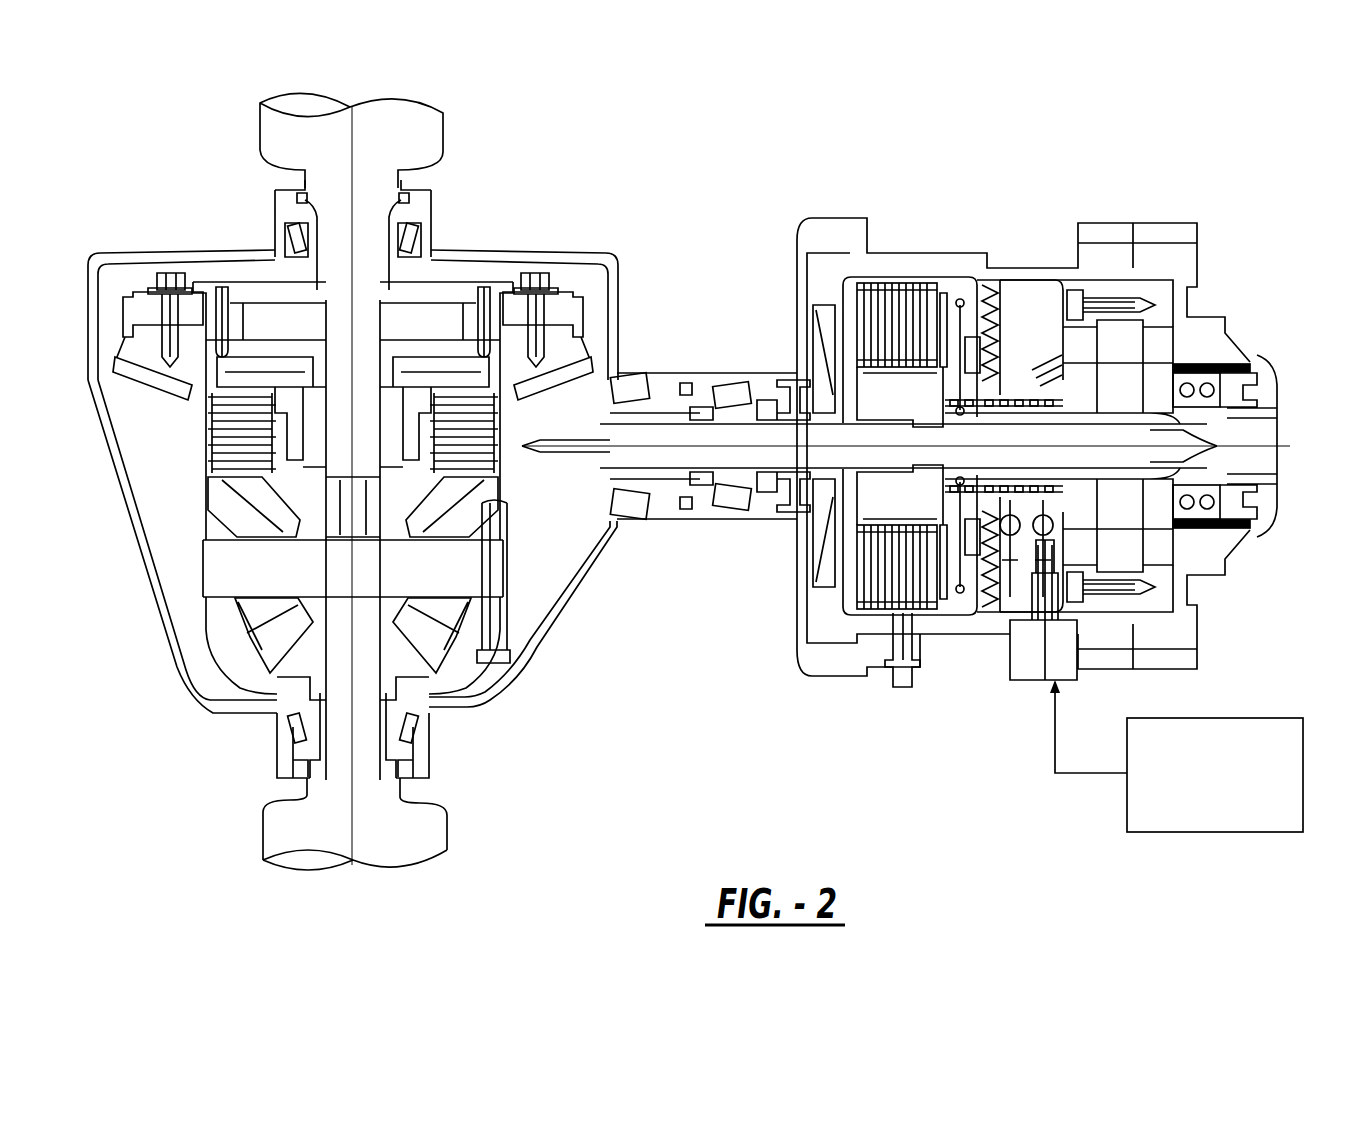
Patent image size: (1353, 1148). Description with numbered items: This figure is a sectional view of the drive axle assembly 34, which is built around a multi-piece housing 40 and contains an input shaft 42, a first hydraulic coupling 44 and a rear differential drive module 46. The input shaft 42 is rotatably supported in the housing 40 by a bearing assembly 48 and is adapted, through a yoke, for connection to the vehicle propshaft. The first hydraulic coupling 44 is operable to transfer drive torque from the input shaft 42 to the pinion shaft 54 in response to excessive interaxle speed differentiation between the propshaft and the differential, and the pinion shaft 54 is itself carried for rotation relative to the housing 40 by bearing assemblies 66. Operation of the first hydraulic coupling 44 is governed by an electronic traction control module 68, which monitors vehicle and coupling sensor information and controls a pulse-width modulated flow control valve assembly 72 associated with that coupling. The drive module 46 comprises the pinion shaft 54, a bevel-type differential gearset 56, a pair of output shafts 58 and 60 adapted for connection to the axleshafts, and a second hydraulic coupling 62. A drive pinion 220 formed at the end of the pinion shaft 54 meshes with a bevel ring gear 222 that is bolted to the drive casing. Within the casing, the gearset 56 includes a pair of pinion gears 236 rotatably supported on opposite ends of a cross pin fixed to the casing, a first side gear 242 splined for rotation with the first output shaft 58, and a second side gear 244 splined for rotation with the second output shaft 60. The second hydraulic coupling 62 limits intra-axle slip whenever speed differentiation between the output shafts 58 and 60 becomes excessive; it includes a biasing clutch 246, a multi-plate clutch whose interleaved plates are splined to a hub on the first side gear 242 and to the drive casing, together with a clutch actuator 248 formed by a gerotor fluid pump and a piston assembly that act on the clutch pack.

The drive axle assembly 34 is at (975, 143).
The first hydraulic coupling 44 is at (840, 268).
The first output shaft 58 is at (430, 140).
The clutch actuator 248 is at (457, 316).
The multi-piece housing 40 is at (612, 258).
The rear differential drive module 46 is at (595, 328).
The bearing assemblies 66 is at (633, 383).
The input shaft 42 is at (1268, 431).
The bevel ring gear 222 is at (158, 375).
The biasing clutch 246 is at (232, 440).
The second hydraulic coupling 62 is at (218, 506).
The pinion gears 236 is at (266, 528).
The first side gear 242 is at (398, 483).
The drive pinion 220 is at (187, 568).
The pinion shaft 54 is at (678, 463).
The bearing assembly 48 is at (1208, 508).
The second side gear 244 is at (297, 660).
The bevel-type differential gearset 56 is at (456, 676).
The second output shaft 60 is at (437, 838).
The flow control valve assembly 72 is at (1027, 653).
The electronic traction control module 68 is at (1277, 732).